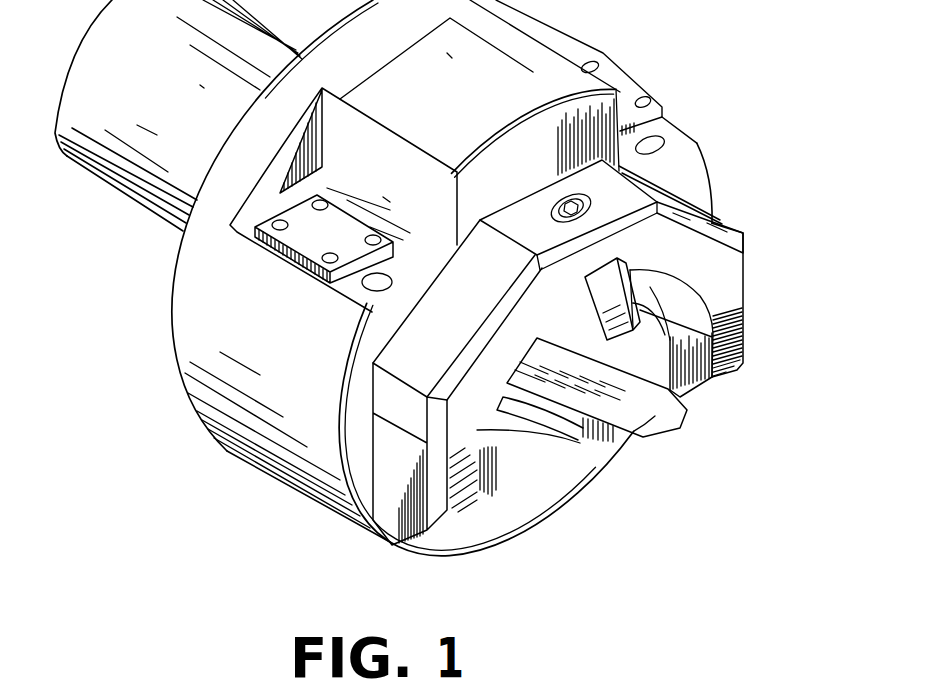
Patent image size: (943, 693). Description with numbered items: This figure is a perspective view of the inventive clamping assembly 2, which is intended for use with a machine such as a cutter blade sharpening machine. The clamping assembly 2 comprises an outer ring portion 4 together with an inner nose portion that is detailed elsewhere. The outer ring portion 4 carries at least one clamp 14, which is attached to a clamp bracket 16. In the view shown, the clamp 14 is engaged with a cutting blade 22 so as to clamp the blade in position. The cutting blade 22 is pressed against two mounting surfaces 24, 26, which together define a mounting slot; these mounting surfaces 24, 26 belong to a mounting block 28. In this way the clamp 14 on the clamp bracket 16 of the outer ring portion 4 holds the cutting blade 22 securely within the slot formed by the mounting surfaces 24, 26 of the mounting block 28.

The clamping assembly 2 is at (436, 279).
The outer ring portion 4 is at (247, 418).
The clamp 14 is at (713, 340).
The clamp bracket 16 is at (721, 294).
The cutting blade 22 is at (640, 430).
The mounting surface 24 is at (702, 380).
The mounting surface 26 is at (554, 400).
The mounting block 28 is at (642, 420).